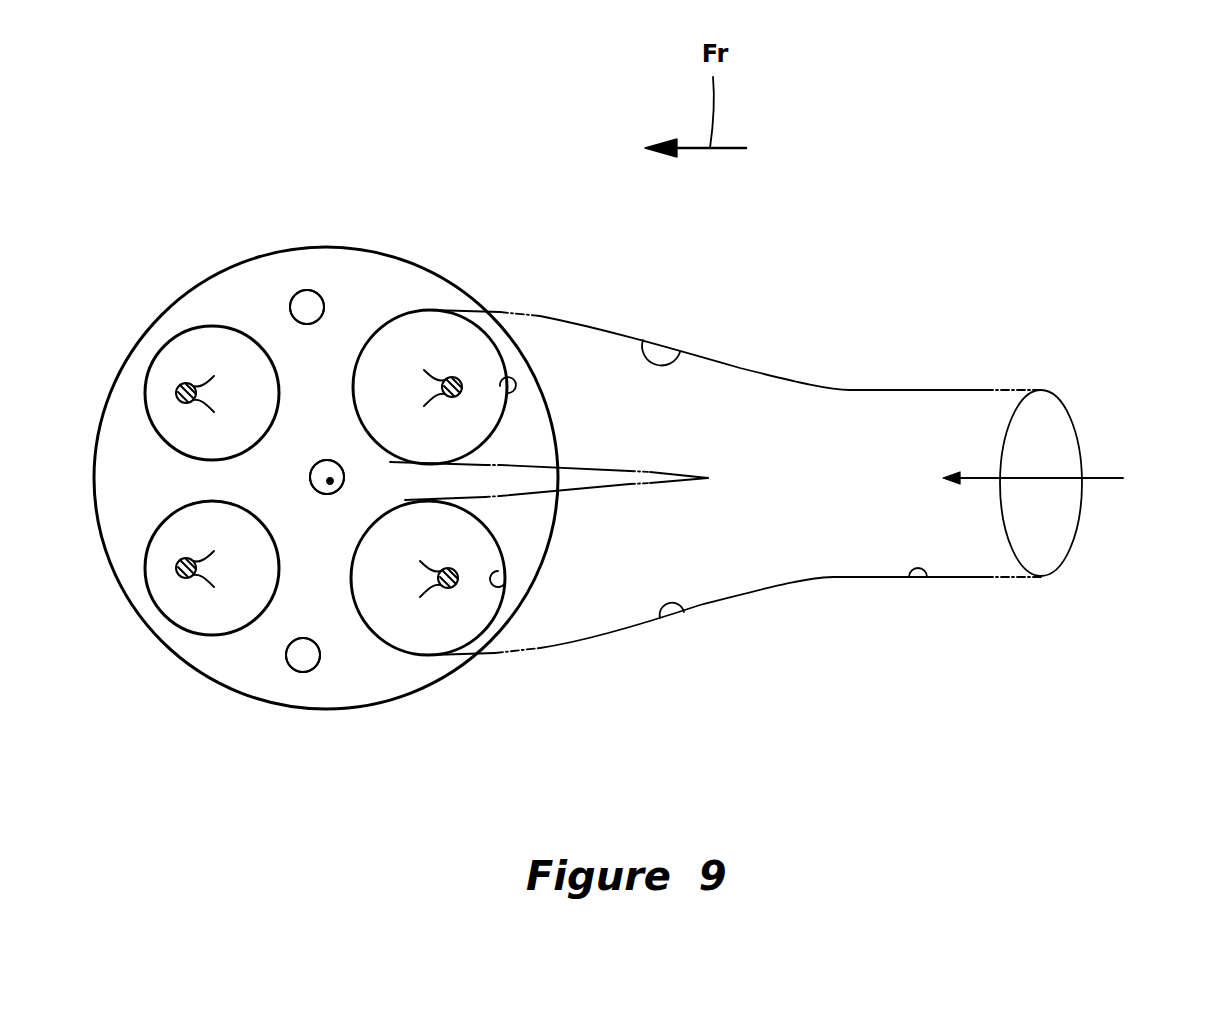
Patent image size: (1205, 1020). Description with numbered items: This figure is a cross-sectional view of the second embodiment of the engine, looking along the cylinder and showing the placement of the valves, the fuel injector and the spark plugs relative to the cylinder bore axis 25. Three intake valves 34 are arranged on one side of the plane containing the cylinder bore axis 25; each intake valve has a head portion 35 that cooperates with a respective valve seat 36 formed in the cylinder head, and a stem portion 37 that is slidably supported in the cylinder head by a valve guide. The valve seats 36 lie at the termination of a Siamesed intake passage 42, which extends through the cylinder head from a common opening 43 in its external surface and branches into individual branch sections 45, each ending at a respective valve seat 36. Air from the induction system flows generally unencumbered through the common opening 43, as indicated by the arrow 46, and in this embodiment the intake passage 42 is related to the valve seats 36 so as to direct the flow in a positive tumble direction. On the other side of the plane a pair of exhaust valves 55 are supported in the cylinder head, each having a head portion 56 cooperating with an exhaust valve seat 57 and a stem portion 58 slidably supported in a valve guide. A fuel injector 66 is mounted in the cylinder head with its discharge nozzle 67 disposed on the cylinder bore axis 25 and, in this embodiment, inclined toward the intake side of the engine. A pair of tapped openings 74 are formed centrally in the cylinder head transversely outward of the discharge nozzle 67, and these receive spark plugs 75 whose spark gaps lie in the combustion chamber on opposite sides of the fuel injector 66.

The cylinder bore axis 25 is at (323, 495).
The intake valves 34 is at (447, 167).
The head portion 35 is at (417, 337).
The valve seat 36 is at (500, 392).
The stem portion 37 is at (460, 380).
The intake passage 42 is at (860, 417).
The common opening 43 is at (926, 577).
The branch sections 45 is at (680, 352).
The arrow 46 is at (1103, 477).
The exhaust valves 55 is at (192, 218).
The head portions 56 is at (208, 345).
The exhaust valve seats 57 is at (163, 598).
The stem portions 58 is at (178, 383).
The fuel injector 66 is at (310, 477).
The discharge nozzle 67 is at (320, 460).
The tapped openings 74 is at (310, 301).
The spark plugs 75 is at (285, 299).